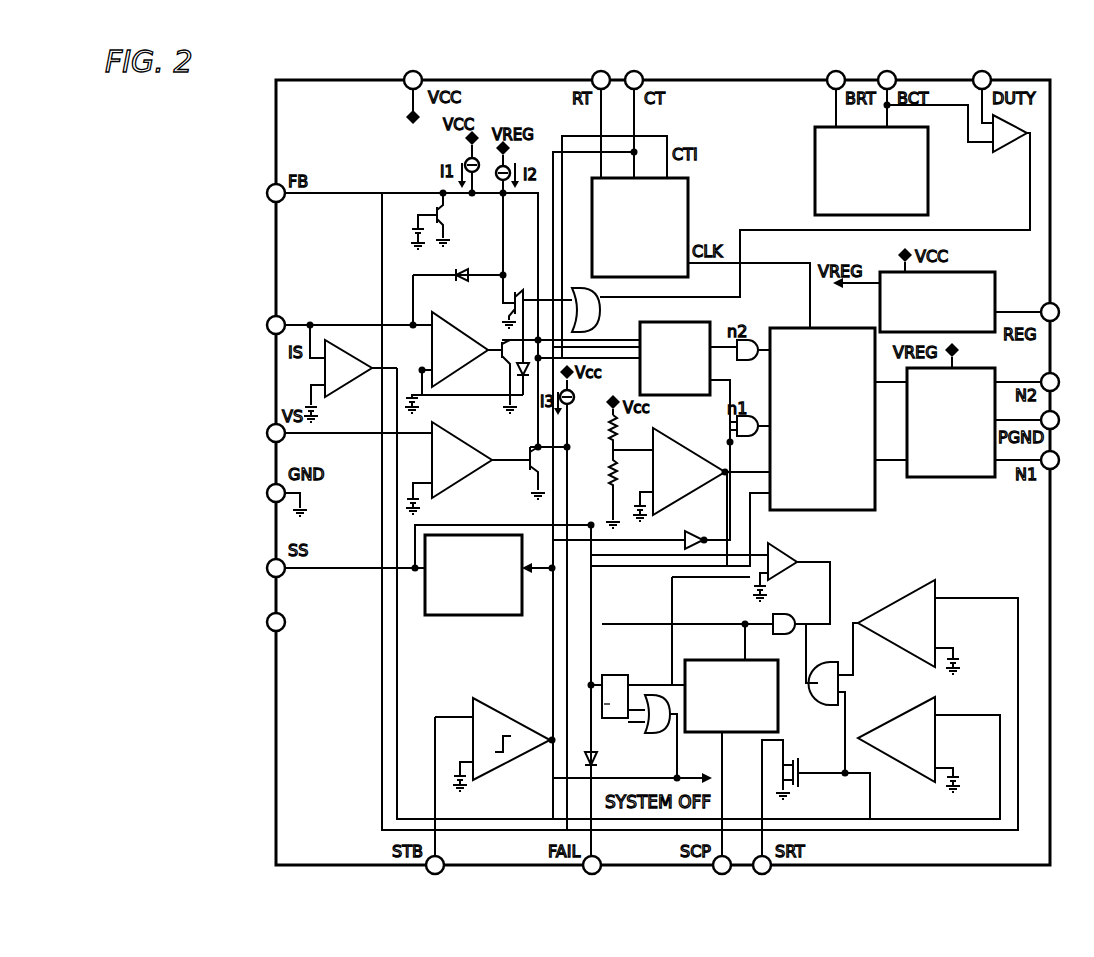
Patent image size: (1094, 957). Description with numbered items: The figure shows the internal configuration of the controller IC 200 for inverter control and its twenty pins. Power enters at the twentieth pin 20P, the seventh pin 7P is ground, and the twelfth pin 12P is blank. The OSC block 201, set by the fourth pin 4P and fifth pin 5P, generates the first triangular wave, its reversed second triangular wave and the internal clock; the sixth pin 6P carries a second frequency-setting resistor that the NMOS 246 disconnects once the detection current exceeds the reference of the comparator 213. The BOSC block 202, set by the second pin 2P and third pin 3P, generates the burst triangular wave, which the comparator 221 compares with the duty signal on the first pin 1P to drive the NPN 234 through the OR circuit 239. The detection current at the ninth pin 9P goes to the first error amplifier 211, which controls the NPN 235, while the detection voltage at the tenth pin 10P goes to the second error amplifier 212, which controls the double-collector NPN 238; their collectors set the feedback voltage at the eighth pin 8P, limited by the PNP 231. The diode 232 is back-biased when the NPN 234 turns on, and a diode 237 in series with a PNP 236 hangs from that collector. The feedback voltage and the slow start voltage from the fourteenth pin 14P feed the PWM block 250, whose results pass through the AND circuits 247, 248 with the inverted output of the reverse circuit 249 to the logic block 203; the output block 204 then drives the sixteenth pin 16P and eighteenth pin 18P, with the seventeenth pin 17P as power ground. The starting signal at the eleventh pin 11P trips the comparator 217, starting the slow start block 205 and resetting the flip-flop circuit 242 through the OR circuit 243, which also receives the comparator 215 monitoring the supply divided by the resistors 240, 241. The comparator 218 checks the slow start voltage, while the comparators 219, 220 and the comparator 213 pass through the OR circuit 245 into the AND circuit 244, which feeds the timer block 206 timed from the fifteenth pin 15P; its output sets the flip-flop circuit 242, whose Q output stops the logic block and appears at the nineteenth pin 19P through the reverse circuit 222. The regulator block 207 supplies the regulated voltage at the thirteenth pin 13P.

The IC for inverter control 200 is at (304, 82).
The OSC block 201 is at (690, 203).
The BOSC block 202 is at (929, 200).
The logic block 203 is at (860, 511).
The output block 204 is at (953, 478).
The slow start block 205 is at (473, 616).
The timer block 206 is at (700, 733).
The REG block 207 is at (983, 271).
The first error amplifier 211 is at (433, 350).
The second error amplifier 212 is at (488, 461).
The comparator 213 is at (345, 340).
The comparator 215 is at (680, 436).
The comparator 217 is at (496, 705).
The comparator 218 is at (794, 538).
The comparator 219 is at (887, 605).
The comparator 220 is at (887, 720).
The comparator 221 is at (1010, 153).
The reverse circuit 222 is at (598, 760).
The PNP transistor 231 is at (447, 218).
The diode 232 is at (462, 270).
The NPN 234 is at (512, 298).
The NPN 235 is at (508, 378).
The PNP 236 is at (533, 450).
The diode 237 is at (515, 408).
The NPN with a double collector structure 238 is at (529, 482).
The OR circuit 239 is at (600, 314).
The resistor 240 is at (631, 432).
The resistor 241 is at (631, 485).
The flip-flop circuit 242 is at (616, 675).
The OR circuit 243 is at (648, 730).
The AND circuit 244 is at (760, 618).
The OR circuit 245 is at (818, 705).
The NMOS 246 is at (805, 790).
The AND circuit with a reverse input terminal 247 is at (750, 438).
The AND circuit with a reverse input terminal 248 is at (750, 362).
The reverse circuit 249 is at (698, 532).
The PWM block 250 is at (708, 322).
The first pin 1P is at (981, 71).
The second pin 2P is at (886, 71).
The third pin 3P is at (835, 71).
The fourth pin 4P is at (633, 71).
The fifth pin 5P is at (600, 71).
The sixth pin 6P is at (762, 878).
The seventh pin 7P is at (264, 492).
The eighth pin 8P is at (264, 188).
The ninth pin 9P is at (264, 320).
The tenth pin 10P is at (258, 428).
The eleventh pin 11P is at (435, 878).
The twelfth pin 12P is at (258, 618).
The thirteenth pin 13P is at (1066, 312).
The fourteenth pin 14P is at (258, 563).
The fifteenth pin 15P is at (722, 878).
The sixteenth pin 16P is at (1066, 382).
The seventeenth pin 17P is at (1066, 420).
The eighteenth pin 18P is at (1066, 460).
The nineteenth pin 19P is at (592, 878).
The twentieth pin 20P is at (413, 88).